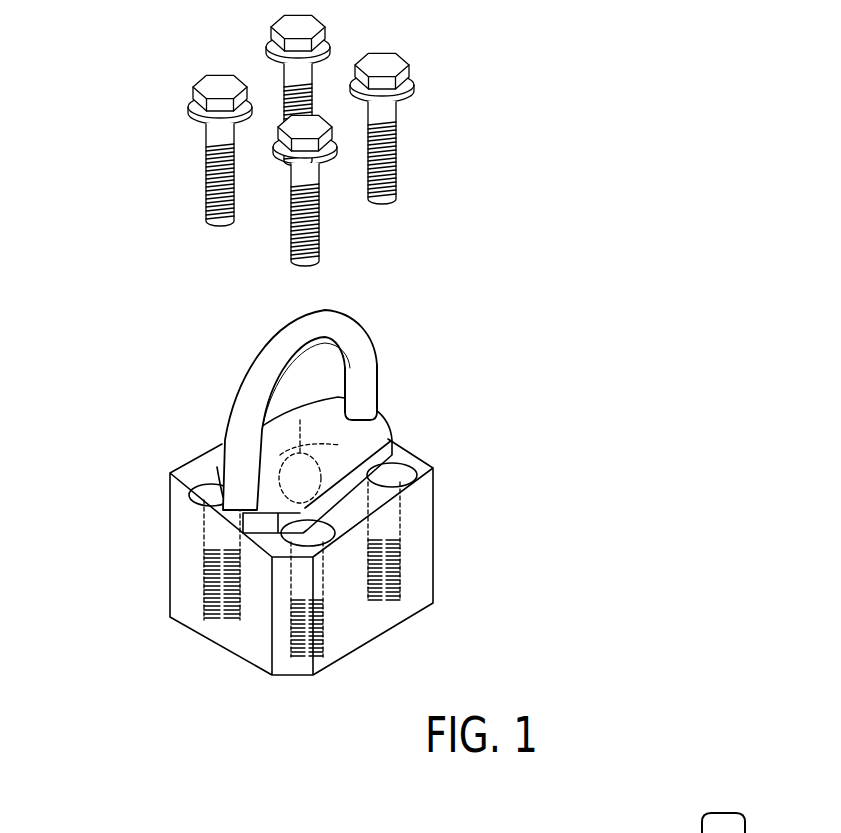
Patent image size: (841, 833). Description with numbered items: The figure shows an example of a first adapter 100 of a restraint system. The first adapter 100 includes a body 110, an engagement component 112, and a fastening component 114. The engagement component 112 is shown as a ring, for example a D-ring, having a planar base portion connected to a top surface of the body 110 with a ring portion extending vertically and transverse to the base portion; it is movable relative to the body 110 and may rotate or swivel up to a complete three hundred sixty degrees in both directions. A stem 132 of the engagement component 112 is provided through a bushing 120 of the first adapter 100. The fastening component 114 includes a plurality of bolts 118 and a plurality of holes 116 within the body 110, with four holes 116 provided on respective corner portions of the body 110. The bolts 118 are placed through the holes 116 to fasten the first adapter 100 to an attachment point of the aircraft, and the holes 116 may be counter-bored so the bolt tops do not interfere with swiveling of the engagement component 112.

The first adapter 100 is at (677, 611).
The body 110 is at (427, 548).
The engagement component 112 is at (302, 332).
The fastening component 114 is at (92, 325).
The holes 116 is at (207, 495).
The bolts 118 is at (270, 43).
The bushing 120 is at (385, 418).
The stem 132 is at (378, 377).